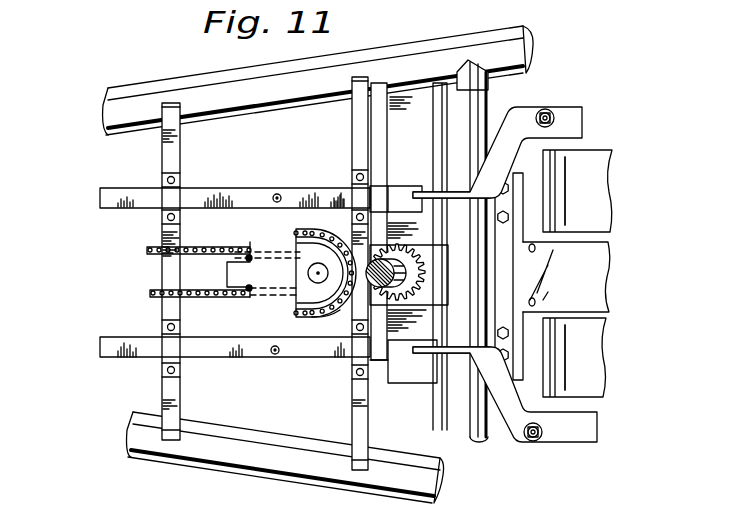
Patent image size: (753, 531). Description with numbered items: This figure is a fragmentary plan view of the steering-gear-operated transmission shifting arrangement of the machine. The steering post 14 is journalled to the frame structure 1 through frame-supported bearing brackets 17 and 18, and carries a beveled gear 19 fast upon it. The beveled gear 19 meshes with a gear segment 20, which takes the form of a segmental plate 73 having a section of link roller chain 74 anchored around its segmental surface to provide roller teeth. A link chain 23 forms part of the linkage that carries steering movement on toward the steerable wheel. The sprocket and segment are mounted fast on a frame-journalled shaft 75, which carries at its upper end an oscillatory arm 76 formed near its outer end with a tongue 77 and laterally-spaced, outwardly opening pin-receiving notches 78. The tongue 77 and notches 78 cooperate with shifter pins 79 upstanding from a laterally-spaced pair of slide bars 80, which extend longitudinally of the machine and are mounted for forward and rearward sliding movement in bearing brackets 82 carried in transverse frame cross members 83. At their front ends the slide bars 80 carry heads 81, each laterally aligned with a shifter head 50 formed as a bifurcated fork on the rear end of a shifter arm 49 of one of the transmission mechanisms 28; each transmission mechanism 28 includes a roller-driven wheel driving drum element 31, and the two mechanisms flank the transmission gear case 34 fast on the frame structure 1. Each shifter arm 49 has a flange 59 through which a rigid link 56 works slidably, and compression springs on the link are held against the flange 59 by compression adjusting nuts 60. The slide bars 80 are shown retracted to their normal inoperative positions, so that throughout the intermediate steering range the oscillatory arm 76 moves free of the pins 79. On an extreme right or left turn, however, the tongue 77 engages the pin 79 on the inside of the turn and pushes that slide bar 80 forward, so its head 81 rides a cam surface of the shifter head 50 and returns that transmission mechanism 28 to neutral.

The frame structure 1 is at (563, 2).
The steering post 14 is at (402, 271).
The bearing bracket 17 is at (434, 283).
The bearing bracket 18 is at (418, 375).
The beveled gear 19 is at (412, 258).
The gear segment 20 is at (312, 308).
The link chain 23 is at (146, 252).
The transmission mechanism 28 is at (585, 167).
The wheel driving drum element 31 is at (600, 183).
The transmission gear case 34 is at (583, 273).
The shifter arm 49 is at (555, 116).
The shifter head 50 is at (438, 193).
The rigid link 56 is at (546, 112).
The flange 59 is at (573, 119).
The compression adjusting nut 60 is at (540, 114).
The segmental plate 73 is at (330, 305).
The section of link roller chain 74 is at (340, 312).
The shaft 75 is at (316, 277).
The oscillatory arm 76 is at (289, 273).
The tongue 77 is at (226, 272).
The pin-receiving notch 78 is at (249, 256).
The shifter pin 79 is at (281, 196).
The slide bar 80 is at (226, 182).
The head 81 is at (405, 182).
The bearing bracket 82 is at (167, 190).
The frame cross member 83 is at (163, 383).